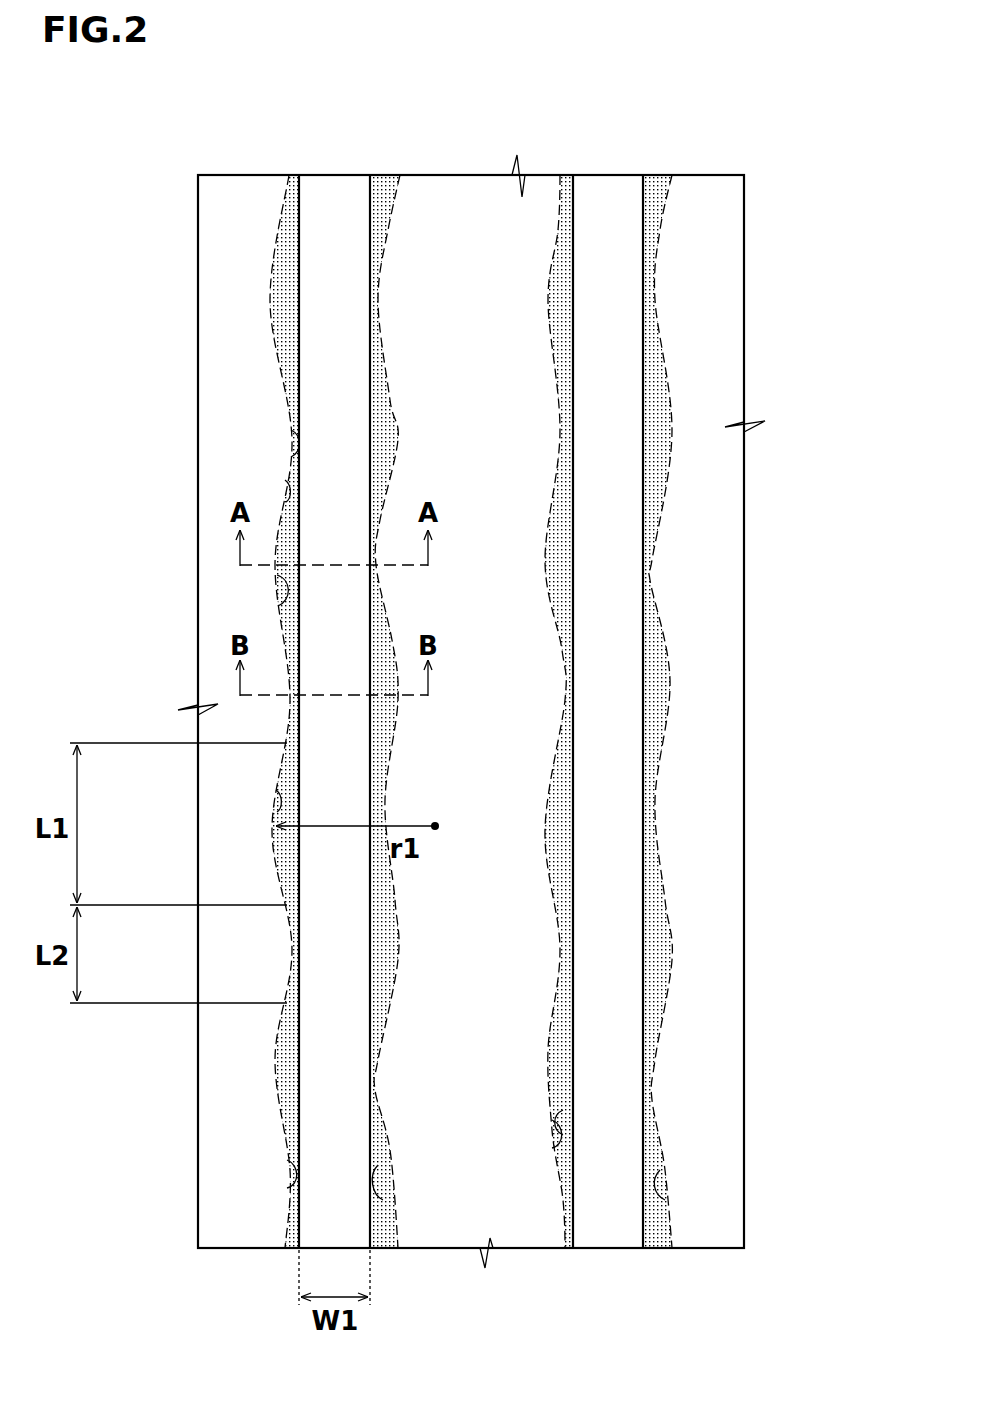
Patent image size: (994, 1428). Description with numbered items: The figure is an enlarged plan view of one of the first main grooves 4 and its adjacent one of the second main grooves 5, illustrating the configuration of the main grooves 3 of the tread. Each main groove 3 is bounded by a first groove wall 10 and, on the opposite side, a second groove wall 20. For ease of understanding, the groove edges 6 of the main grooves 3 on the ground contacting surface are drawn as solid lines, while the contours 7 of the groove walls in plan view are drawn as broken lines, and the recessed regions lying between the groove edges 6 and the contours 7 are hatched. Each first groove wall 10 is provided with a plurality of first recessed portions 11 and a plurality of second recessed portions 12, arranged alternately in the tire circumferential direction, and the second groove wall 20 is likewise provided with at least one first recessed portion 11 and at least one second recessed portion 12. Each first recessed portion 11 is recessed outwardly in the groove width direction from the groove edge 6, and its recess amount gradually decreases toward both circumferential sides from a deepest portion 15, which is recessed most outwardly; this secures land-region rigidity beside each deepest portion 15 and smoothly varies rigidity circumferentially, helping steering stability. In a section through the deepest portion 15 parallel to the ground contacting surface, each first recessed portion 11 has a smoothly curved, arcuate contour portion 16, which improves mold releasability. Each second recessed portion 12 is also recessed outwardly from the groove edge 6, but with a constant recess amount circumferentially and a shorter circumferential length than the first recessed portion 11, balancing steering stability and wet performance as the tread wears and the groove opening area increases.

The main groove 3 is at (332, 218).
The first main groove 4 is at (332, 218).
The second main groove 5 is at (604, 218).
The groove edge 6 is at (300, 1205).
The contour of the groove wall 7 is at (290, 1180).
The first groove wall 10 is at (289, 233).
The second groove wall 20 is at (386, 229).
The first recessed portion 11 is at (275, 310).
The second recessed portion 12 is at (293, 440).
The deepest portion 15 is at (278, 596).
The contour portion 16 is at (285, 488).